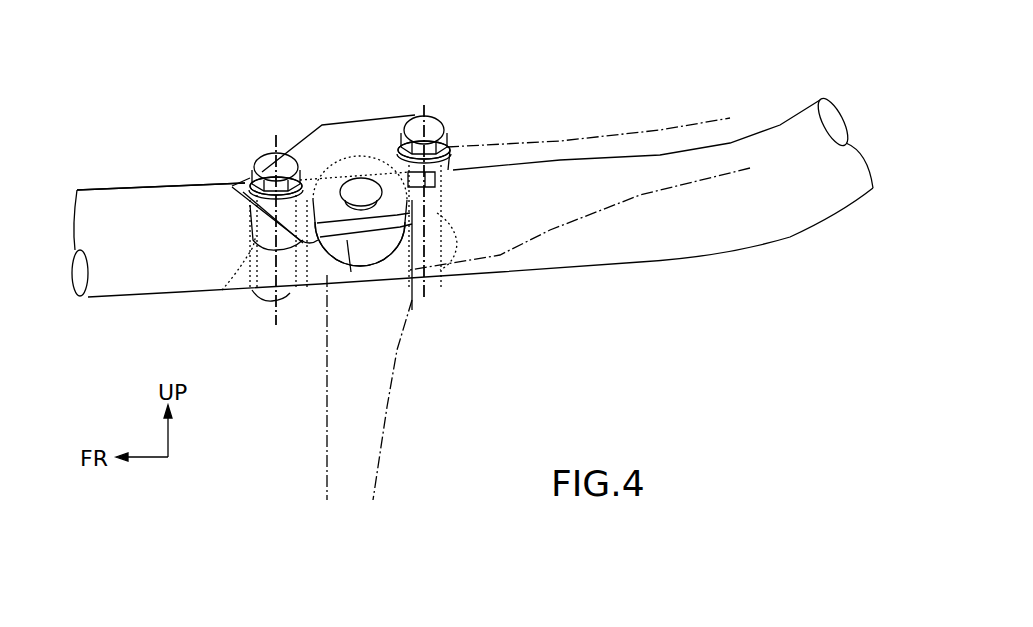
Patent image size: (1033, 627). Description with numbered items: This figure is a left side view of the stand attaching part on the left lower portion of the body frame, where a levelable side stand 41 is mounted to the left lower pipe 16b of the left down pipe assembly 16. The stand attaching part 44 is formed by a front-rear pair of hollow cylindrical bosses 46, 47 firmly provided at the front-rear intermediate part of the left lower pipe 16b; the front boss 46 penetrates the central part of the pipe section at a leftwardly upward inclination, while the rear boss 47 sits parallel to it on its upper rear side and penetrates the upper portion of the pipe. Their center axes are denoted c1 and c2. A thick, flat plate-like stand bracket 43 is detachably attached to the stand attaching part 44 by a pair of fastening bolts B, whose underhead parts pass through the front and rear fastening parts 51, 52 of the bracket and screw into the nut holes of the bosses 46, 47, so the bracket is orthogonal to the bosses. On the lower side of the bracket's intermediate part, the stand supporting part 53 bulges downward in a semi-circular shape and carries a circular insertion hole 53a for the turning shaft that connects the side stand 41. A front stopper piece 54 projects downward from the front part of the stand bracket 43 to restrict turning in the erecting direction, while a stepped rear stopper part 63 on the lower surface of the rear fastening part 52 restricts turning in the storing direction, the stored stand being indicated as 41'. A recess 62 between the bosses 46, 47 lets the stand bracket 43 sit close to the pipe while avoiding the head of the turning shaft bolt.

The left down pipe assembly 16 is at (101, 191).
The left lower pipe 16b is at (163, 197).
The side stand 41 is at (406, 387).
The side stand in stored state 41' is at (580, 154).
The stand bracket 43 is at (322, 124).
The stand attaching part 44 is at (328, 270).
The front boss 46 is at (222, 292).
The rear boss 47 is at (453, 243).
The front fastening part 51 is at (243, 187).
The rear fastening part 52 is at (450, 155).
The stand supporting part 53 is at (377, 240).
The insertion hole 53a is at (355, 208).
The front stopper piece 54 is at (308, 233).
The recess 62 is at (348, 273).
The rear stopper part 63 is at (437, 178).
The fastening bolt B is at (267, 157).
The center axis of front boss c1 is at (277, 323).
The center axis of rear boss c2 is at (423, 294).